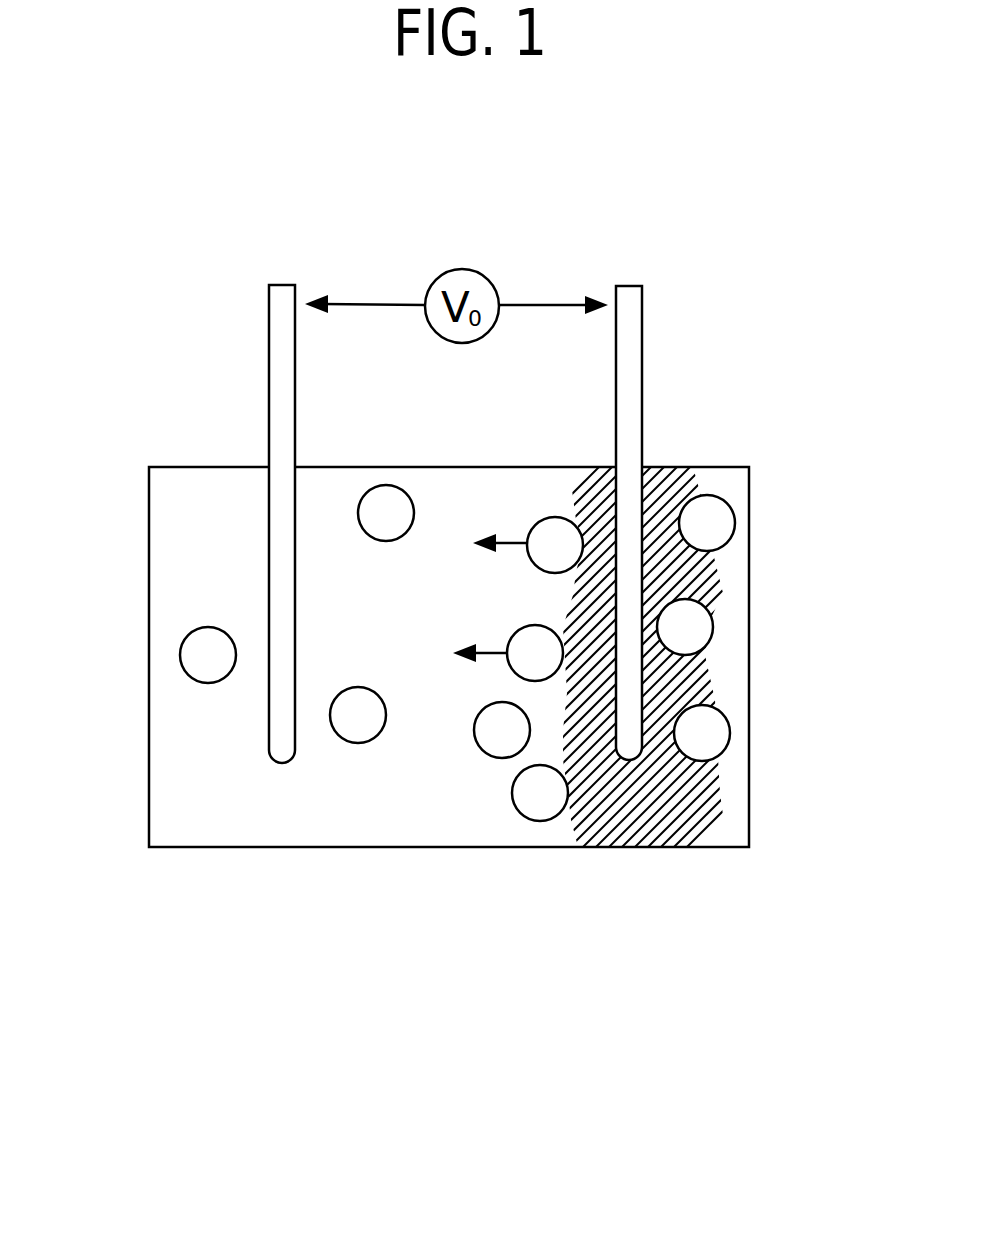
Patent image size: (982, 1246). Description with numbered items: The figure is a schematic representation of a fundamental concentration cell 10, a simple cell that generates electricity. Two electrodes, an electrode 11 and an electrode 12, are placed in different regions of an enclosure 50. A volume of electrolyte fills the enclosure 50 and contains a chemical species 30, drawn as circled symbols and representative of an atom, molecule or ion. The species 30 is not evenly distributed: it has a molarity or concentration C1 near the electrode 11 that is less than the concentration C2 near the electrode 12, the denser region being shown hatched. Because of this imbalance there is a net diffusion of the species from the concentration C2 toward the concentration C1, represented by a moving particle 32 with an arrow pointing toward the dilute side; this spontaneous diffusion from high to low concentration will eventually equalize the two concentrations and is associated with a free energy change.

The concentration cell 10 is at (291, 920).
The electrode 11 is at (269, 397).
The electrode 12 is at (642, 397).
The chemical species 30 is at (182, 650).
The moving particle 32 is at (538, 524).
The enclosure 50 is at (749, 540).
The concentration C1 is at (232, 803).
The concentration C2 is at (668, 807).